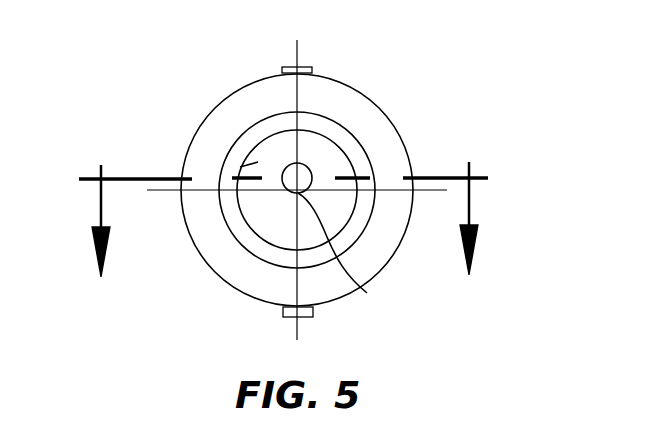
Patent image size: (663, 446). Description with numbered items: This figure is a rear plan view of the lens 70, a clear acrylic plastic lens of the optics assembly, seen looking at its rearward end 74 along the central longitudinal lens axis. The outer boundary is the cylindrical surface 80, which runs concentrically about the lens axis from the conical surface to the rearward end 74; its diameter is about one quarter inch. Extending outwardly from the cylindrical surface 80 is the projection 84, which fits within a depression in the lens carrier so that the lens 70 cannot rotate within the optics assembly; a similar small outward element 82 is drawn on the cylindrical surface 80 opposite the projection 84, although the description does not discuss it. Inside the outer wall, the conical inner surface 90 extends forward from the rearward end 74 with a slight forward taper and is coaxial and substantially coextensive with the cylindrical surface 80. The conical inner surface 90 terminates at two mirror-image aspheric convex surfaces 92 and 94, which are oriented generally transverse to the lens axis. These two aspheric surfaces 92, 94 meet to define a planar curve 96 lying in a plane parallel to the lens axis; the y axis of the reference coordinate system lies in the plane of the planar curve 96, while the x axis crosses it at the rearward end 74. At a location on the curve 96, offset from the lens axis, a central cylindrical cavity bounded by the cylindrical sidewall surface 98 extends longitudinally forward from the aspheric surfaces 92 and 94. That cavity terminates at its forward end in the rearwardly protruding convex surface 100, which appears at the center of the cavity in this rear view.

The lens 70 is at (283, 198).
The rearward end 74 is at (350, 141).
The cylindrical surface 80 is at (193, 248).
The upper tab 82 is at (305, 66).
The projection 84 is at (313, 315).
The conical inner surface 90 is at (363, 220).
The aspheric convex surface 92 is at (273, 148).
The aspheric convex surface 94 is at (240, 167).
The planar curve 96 is at (327, 174).
The cylindrical sidewall surface 98 is at (367, 293).
The rearwardly protruding convex surface 100 is at (295, 173).